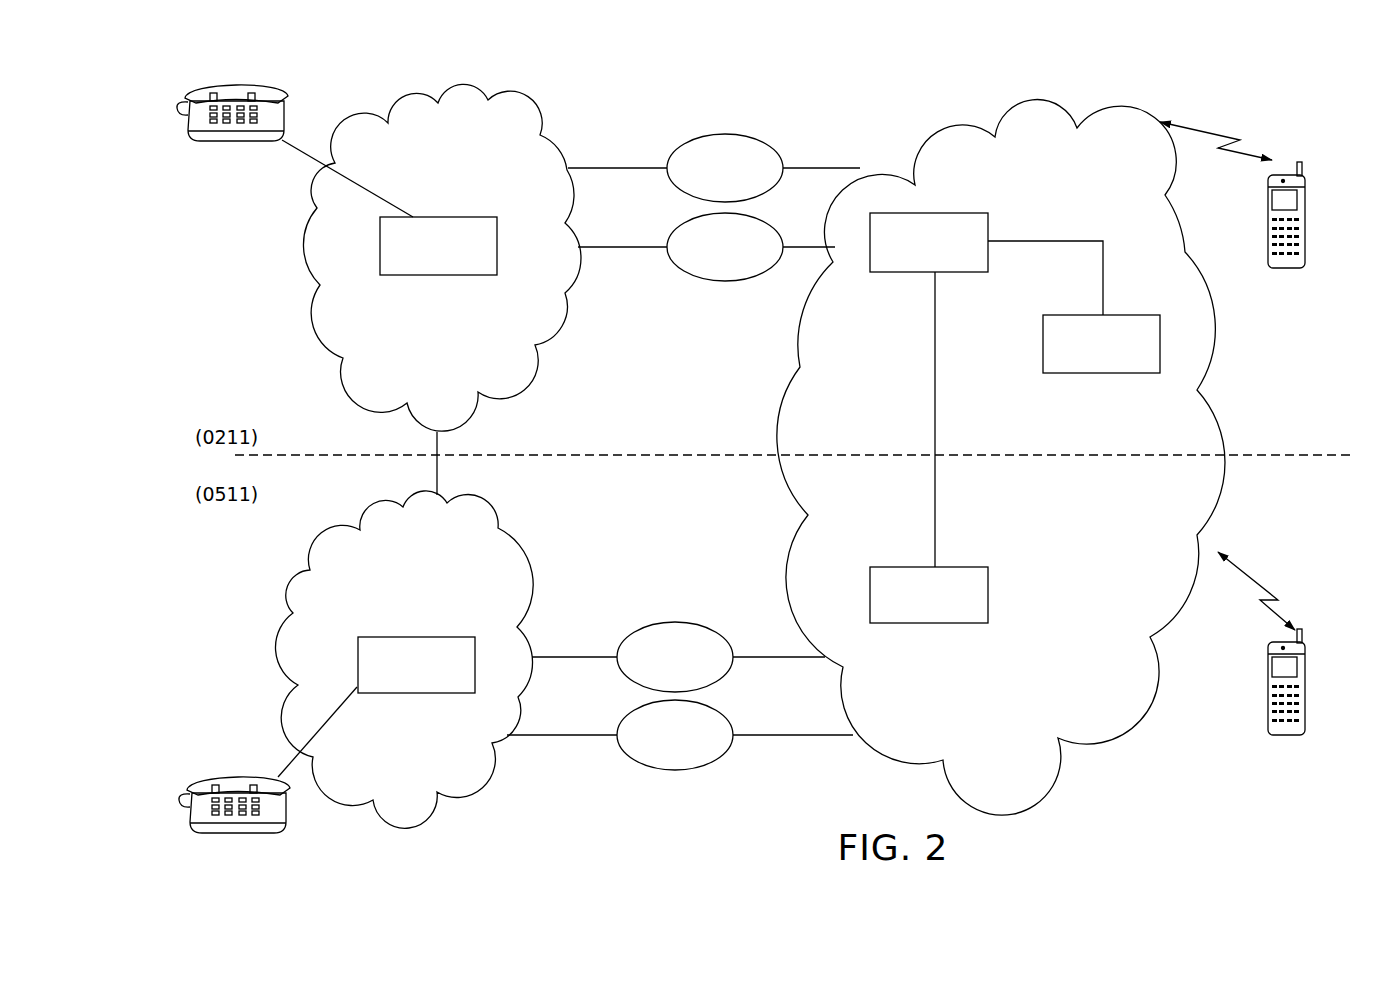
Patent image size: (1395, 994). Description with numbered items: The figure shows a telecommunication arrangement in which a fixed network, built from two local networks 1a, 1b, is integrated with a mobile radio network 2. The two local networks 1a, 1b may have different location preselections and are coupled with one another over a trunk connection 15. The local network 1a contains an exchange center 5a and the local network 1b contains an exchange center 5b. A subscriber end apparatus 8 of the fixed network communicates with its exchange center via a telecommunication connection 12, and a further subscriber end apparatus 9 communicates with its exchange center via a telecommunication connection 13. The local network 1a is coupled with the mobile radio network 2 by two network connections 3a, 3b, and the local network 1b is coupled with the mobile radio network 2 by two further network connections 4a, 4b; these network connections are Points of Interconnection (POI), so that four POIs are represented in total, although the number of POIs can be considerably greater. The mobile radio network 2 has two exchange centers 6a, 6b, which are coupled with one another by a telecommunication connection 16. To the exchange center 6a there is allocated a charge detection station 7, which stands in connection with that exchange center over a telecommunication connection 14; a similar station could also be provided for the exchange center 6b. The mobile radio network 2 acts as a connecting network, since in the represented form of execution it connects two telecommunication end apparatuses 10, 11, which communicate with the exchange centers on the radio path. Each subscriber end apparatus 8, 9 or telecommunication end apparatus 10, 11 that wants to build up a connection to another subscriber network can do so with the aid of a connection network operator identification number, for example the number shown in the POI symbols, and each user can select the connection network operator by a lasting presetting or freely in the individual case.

The local network 1a is at (492, 130).
The local network 1b is at (260, 675).
The mobile radio network 2 is at (1230, 495).
The network connection 3a is at (592, 147).
The network connection 3b is at (600, 277).
The network connection 4a is at (552, 647).
The network connection 4b is at (820, 740).
The exchange center 5a is at (438, 246).
The exchange center 5b is at (416, 665).
The exchange center 6a is at (929, 242).
The exchange center 6b is at (929, 595).
The charge detection station 7 is at (1101, 344).
The subscriber end apparatus 8 is at (250, 167).
The subscriber end apparatus 9 is at (230, 757).
The telecommunication end apparatus 10 is at (1305, 150).
The telecommunication end apparatus 11 is at (1312, 655).
The telecommunication connection 12 is at (305, 140).
The telecommunication connection 13 is at (363, 742).
The telecommunication connection 14 is at (1123, 283).
The trunk connection 15 is at (447, 468).
The telecommunication connection 16 is at (920, 430).